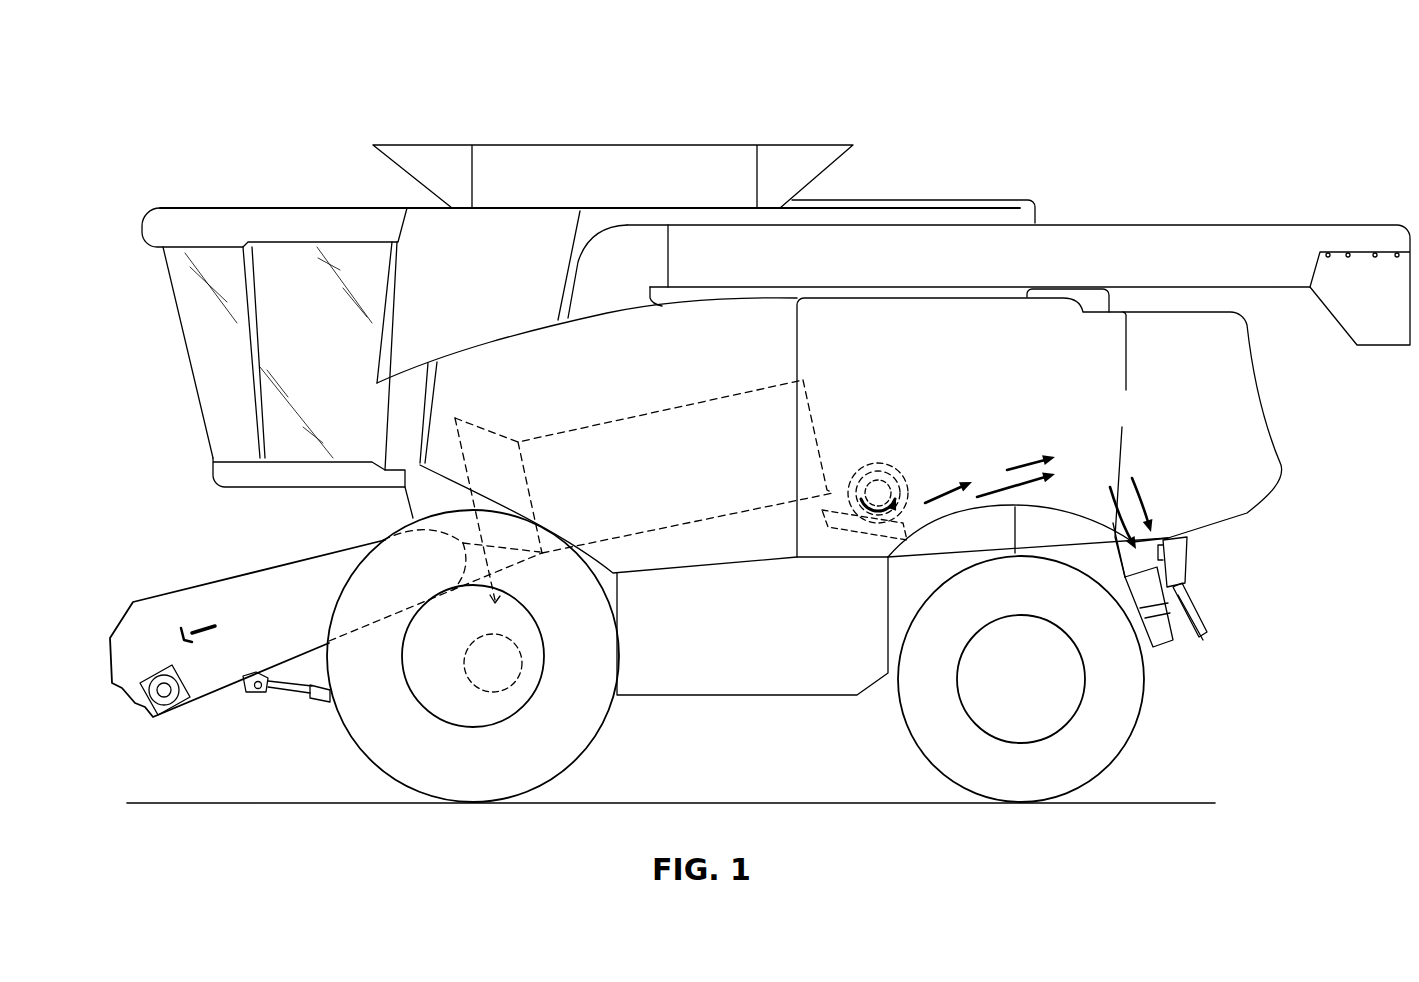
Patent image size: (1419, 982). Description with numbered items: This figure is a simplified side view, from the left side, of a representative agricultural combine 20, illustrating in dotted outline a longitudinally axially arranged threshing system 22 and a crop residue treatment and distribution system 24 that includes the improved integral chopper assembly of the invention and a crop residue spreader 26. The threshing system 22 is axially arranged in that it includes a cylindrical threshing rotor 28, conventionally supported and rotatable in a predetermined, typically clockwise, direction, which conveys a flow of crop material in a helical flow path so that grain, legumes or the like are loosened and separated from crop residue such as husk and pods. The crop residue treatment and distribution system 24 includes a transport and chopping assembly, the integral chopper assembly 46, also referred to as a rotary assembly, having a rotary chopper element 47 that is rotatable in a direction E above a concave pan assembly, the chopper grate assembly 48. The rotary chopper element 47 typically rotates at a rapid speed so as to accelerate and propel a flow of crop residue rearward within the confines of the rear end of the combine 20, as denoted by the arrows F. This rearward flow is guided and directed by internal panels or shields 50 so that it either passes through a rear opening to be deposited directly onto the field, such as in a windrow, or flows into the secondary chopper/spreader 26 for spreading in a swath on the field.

The agricultural combine 20 is at (220, 102).
The threshing system 22 is at (588, 420).
The crop residue treatment and distribution system 24 is at (915, 453).
The crop residue spreader 26 is at (1178, 655).
The threshing rotor 28 is at (652, 533).
The integral chopper assembly 46 is at (876, 457).
The rotary chopper element 47 is at (910, 474).
The chopper grate assembly 48 is at (836, 536).
The shields 50 is at (1178, 540).
The direction of rotation E is at (875, 520).
The arrows denoting rearward flow of crop residue F is at (1008, 485).